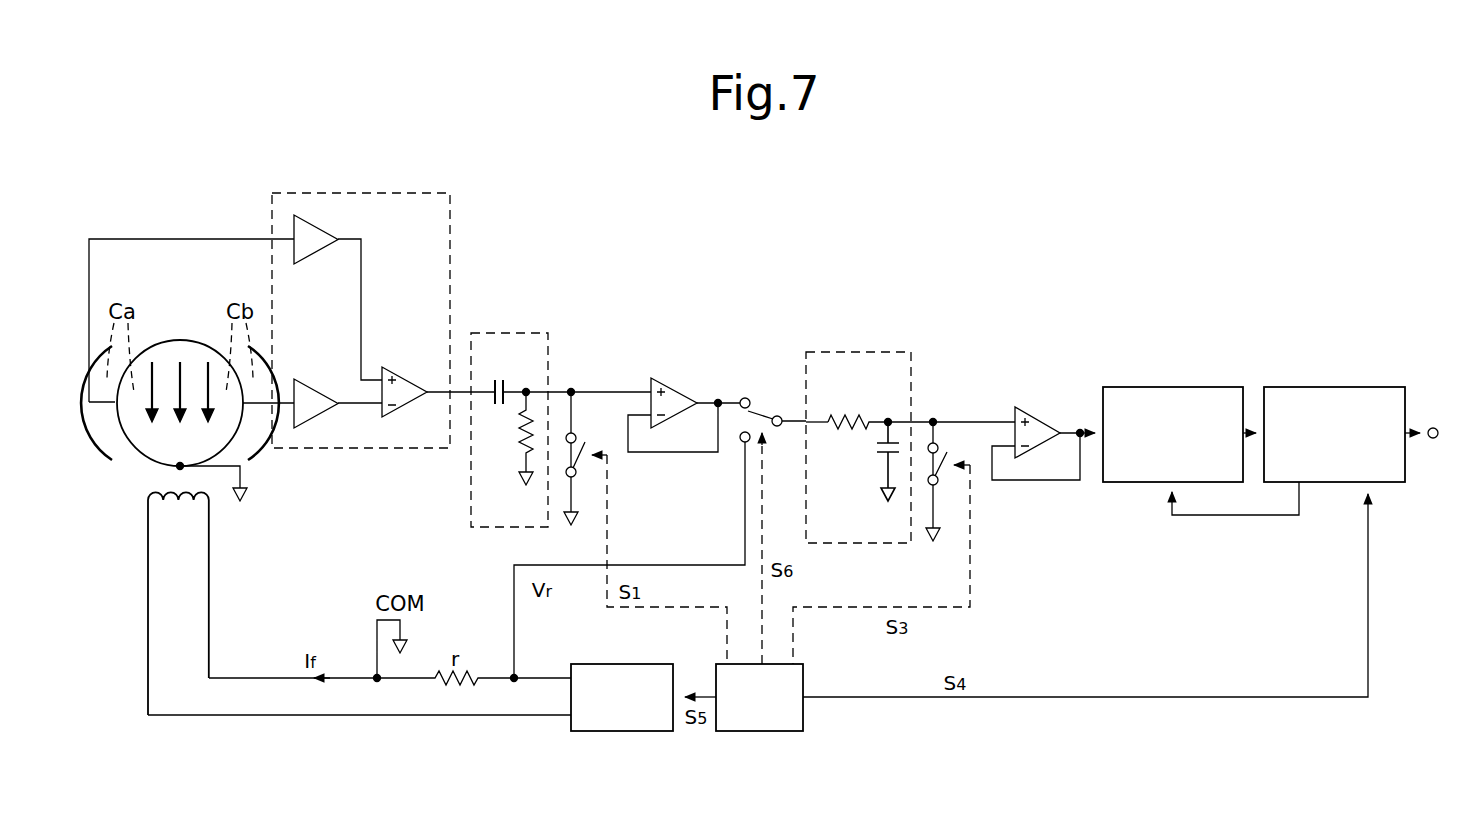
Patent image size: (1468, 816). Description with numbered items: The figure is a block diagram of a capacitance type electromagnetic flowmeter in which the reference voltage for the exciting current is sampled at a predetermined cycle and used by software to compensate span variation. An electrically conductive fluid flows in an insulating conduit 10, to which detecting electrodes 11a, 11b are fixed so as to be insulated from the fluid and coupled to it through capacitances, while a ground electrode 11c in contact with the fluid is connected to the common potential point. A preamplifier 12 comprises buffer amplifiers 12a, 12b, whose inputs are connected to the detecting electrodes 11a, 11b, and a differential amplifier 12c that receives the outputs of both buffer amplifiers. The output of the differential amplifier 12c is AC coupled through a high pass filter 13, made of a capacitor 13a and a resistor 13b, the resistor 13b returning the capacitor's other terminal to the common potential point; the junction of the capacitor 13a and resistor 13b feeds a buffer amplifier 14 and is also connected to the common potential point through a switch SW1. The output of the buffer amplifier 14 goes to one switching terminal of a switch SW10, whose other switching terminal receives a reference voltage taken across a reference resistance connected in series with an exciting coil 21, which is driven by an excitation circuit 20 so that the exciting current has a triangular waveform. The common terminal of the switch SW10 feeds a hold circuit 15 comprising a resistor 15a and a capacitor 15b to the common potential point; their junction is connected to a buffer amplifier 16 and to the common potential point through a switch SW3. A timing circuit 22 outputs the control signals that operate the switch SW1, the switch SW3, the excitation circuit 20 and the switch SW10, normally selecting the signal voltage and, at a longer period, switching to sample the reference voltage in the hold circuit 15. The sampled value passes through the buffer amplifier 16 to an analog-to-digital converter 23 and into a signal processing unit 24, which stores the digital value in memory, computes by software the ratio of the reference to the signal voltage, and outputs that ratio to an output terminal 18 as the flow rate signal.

The insulating conduit 10 is at (180, 340).
The detecting electrode 11a is at (108, 410).
The detecting electrode 11b is at (249, 425).
The ground electrode 11c is at (180, 466).
The preamplifier 12 is at (298, 192).
The buffer amplifier 12a is at (310, 233).
The buffer amplifier 12b is at (310, 413).
The differential amplifier 12c is at (407, 373).
The high pass filter 13 is at (500, 333).
The capacitor 13a is at (500, 380).
The resistor 13b is at (518, 423).
The buffer amplifier 14 is at (673, 387).
The hold circuit 15 is at (828, 352).
The resistor 15a is at (843, 415).
The capacitor 15b is at (878, 448).
The buffer amplifier 16 is at (1037, 425).
The output terminal 18 is at (1435, 428).
The excitation circuit 20 is at (637, 731).
The exciting coil 21 is at (183, 507).
The timing circuit 22 is at (770, 731).
The analog-to-digital converter 23 is at (1172, 387).
The signal processing unit 24 is at (1334, 387).
The switch SW1 is at (639, 527).
The switch SW3 is at (906, 542).
The switch SW10 is at (755, 395).